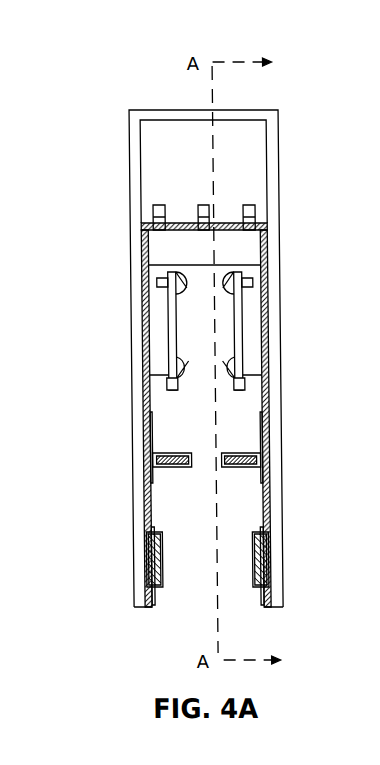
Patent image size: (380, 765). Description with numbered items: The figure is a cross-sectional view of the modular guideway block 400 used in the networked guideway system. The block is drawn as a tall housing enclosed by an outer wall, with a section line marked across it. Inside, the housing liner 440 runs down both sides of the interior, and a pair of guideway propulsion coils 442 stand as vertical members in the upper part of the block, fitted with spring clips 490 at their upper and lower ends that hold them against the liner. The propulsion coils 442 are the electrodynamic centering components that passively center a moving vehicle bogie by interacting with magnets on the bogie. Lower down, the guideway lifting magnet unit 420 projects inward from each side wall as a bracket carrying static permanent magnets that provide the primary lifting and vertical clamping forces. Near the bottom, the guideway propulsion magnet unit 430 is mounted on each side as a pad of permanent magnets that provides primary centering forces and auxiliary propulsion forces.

The modular guideway block 400 is at (163, 79).
The housing liner 440 is at (154, 304).
The guideway propulsion coils 442 is at (166, 336).
The spring clip 490 is at (254, 283).
The guideway lifting magnet unit 420 is at (153, 463).
The guideway propulsion magnet unit 430 is at (153, 548).